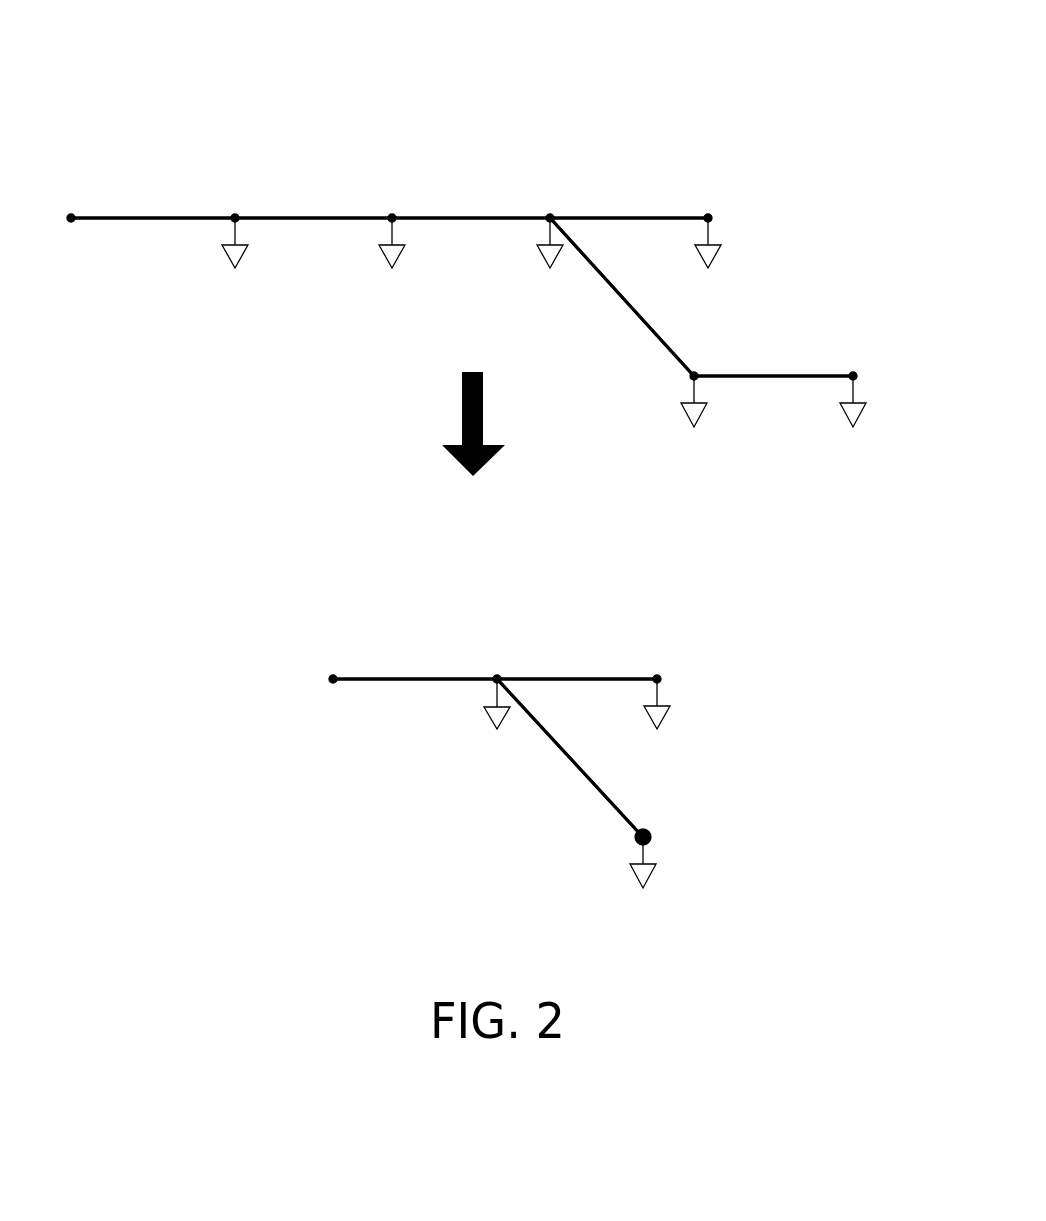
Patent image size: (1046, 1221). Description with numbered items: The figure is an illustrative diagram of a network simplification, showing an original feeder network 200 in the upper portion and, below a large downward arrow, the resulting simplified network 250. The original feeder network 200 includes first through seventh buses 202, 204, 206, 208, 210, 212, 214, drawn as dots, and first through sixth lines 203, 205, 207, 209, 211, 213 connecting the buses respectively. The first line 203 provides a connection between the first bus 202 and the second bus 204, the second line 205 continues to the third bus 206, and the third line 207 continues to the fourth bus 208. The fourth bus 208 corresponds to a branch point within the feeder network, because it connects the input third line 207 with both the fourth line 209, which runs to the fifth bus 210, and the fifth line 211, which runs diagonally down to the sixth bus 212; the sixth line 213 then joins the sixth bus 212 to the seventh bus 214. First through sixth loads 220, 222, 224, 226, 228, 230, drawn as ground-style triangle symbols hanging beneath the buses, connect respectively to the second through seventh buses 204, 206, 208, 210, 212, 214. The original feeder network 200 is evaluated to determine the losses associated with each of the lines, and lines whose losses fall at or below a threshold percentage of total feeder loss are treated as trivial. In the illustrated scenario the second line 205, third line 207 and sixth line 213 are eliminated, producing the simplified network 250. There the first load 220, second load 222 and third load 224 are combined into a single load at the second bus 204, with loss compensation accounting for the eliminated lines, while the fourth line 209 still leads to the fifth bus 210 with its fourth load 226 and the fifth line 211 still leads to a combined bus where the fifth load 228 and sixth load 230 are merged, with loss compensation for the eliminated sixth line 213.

The original feeder network 200 is at (438, 76).
The simplified network 250 is at (474, 579).
The first bus 202 is at (71, 216).
The second bus 204 is at (235, 216).
The third bus 206 is at (392, 216).
The fourth bus 208 is at (550, 216).
The fifth bus 210 is at (708, 216).
The sixth bus 212 is at (695, 368).
The seventh bus 214 is at (853, 370).
The first line 203 is at (178, 220).
The second line 205 is at (350, 220).
The third line 207 is at (510, 220).
The fourth line 209 is at (670, 220).
The fifth line 211 is at (632, 307).
The sixth line 213 is at (798, 378).
The first load 220 is at (228, 256).
The second load 222 is at (383, 255).
The third load 224 is at (543, 255).
The fourth load 226 is at (700, 251).
The fifth load 228 is at (688, 402).
The sixth load 230 is at (840, 404).